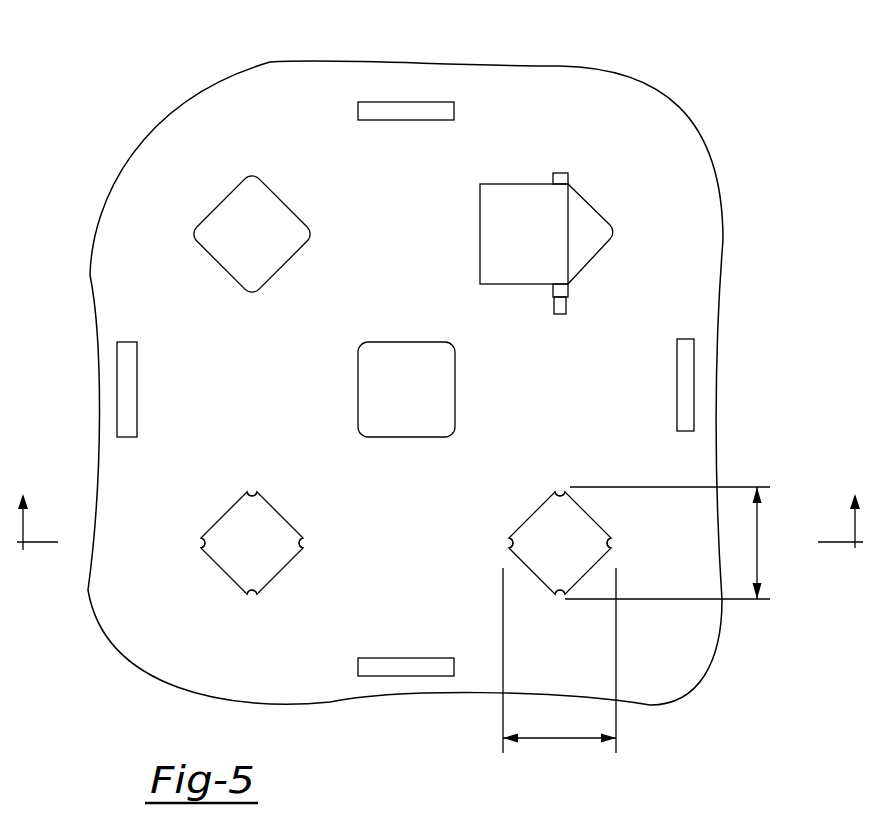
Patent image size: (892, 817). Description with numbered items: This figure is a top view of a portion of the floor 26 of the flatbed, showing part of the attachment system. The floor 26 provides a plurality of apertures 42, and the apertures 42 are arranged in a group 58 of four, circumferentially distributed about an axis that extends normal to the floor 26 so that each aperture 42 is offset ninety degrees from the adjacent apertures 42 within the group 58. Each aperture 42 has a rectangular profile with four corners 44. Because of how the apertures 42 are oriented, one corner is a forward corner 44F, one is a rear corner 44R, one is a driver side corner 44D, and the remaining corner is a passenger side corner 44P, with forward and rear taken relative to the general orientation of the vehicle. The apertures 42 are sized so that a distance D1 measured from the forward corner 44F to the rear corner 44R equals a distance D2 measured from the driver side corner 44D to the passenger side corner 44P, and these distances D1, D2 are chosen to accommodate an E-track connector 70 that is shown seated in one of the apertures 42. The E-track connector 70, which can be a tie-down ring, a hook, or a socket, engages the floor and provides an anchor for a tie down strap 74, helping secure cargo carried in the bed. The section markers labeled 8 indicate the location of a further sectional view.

The floor 26 is at (687, 247).
The group 58 is at (519, 93).
The aperture 42 is at (224, 226).
The corner 44 is at (262, 492).
The driver side corner 44D is at (572, 492).
The forward corner 44F is at (613, 545).
The passenger side corner 44P is at (565, 597).
The rear corner 44R is at (510, 552).
The E-track connector 70 is at (567, 304).
The tie down strap 74 is at (507, 258).
The distance from forward corner to rear corner D1 is at (740, 548).
The distance from driver side corner to passenger side corner D2 is at (563, 725).
The section line 8 is at (438, 540).